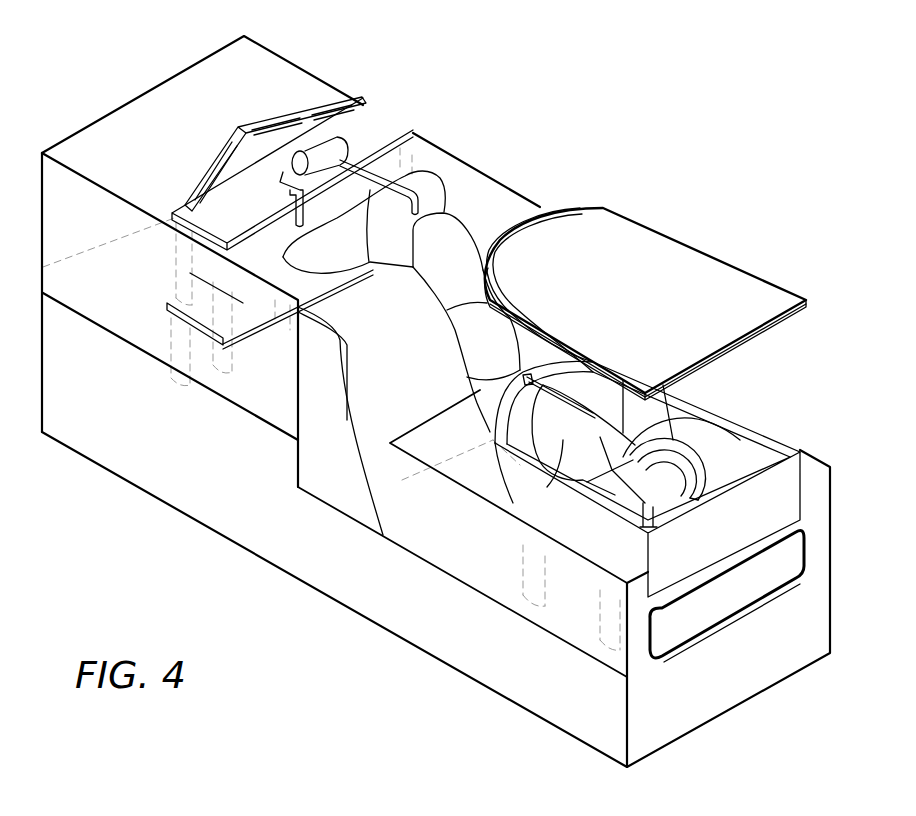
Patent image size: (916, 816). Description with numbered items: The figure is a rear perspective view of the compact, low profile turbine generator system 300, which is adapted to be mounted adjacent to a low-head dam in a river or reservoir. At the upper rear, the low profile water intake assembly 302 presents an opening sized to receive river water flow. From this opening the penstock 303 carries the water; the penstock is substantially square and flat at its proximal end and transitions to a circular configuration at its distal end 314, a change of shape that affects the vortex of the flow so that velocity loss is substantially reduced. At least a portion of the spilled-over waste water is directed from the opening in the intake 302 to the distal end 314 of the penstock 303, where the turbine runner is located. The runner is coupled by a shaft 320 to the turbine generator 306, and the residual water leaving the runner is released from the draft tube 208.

The turbine generator system 300 is at (737, 122).
The water intake assembly 302 is at (457, 175).
The penstock 303 is at (452, 264).
The turbine generator 306 is at (672, 478).
The distal end of the penstock 314 is at (628, 478).
The shaft 320 is at (622, 457).
The draft tube 208 is at (805, 548).